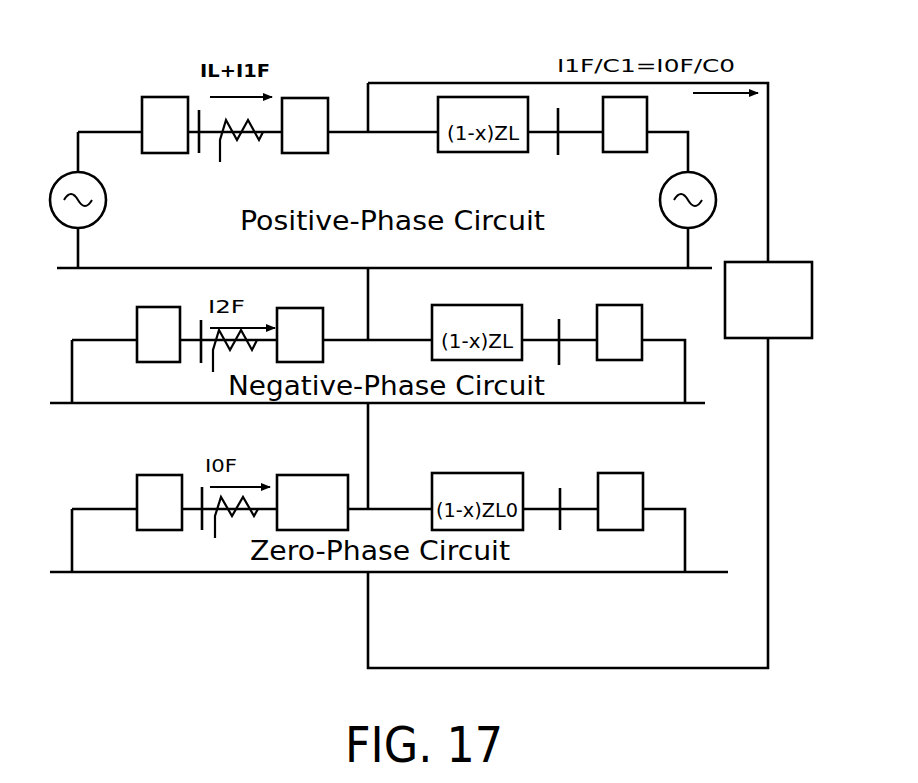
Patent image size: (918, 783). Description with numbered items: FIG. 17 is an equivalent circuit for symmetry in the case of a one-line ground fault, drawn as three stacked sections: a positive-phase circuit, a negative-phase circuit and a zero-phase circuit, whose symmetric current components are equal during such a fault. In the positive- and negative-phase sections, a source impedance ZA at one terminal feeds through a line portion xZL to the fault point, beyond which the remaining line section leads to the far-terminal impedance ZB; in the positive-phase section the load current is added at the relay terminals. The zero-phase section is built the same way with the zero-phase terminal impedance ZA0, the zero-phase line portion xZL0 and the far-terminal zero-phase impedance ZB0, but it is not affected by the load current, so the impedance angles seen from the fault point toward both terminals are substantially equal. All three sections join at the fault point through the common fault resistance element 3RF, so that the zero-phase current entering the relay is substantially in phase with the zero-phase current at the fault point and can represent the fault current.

The back impedance of terminal A ZA is at (162, 229).
The line impedance from terminal A to fault point xZL is at (302, 230).
The back impedance of terminal B ZB is at (622, 228).
The zero-phase back impedance of terminal A ZA0 is at (159, 502).
The zero-phase line impedance from terminal A to fault point xZL0 is at (312, 502).
The zero-phase back impedance of terminal B ZB0 is at (620, 501).
The fault resistance (three times) 3RF is at (768, 300).